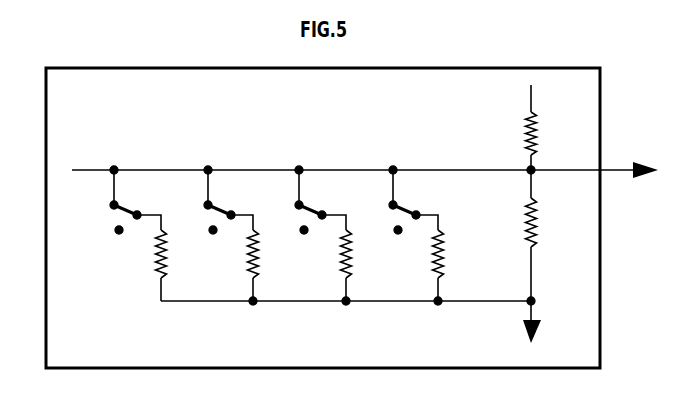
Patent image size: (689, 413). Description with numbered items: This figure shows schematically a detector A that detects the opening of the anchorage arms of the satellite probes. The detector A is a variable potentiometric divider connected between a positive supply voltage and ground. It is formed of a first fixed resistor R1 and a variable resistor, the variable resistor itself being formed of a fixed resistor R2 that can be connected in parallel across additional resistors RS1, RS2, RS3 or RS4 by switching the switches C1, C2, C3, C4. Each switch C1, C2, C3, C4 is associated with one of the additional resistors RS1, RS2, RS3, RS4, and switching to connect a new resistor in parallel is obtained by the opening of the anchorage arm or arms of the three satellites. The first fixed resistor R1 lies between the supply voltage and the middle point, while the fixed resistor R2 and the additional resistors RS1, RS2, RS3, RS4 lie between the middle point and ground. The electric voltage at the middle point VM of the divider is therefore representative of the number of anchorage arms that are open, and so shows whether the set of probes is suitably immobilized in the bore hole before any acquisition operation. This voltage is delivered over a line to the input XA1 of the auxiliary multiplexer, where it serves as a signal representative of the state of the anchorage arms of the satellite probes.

The detector A is at (606, 298).
The input of the auxiliary multiplexer XA1 is at (371, 160).
The switch C1 is at (405, 200).
The switch C2 is at (312, 200).
The switch C3 is at (222, 200).
The switch C4 is at (127, 200).
The additional resistor RS1 is at (446, 260).
The additional resistor RS2 is at (353, 260).
The additional resistor RS3 is at (261, 260).
The additional resistor RS4 is at (169, 258).
The first fixed resistor R1 is at (517, 141).
The fixed resistor R2 is at (520, 270).
The middle point voltage VM is at (545, 184).